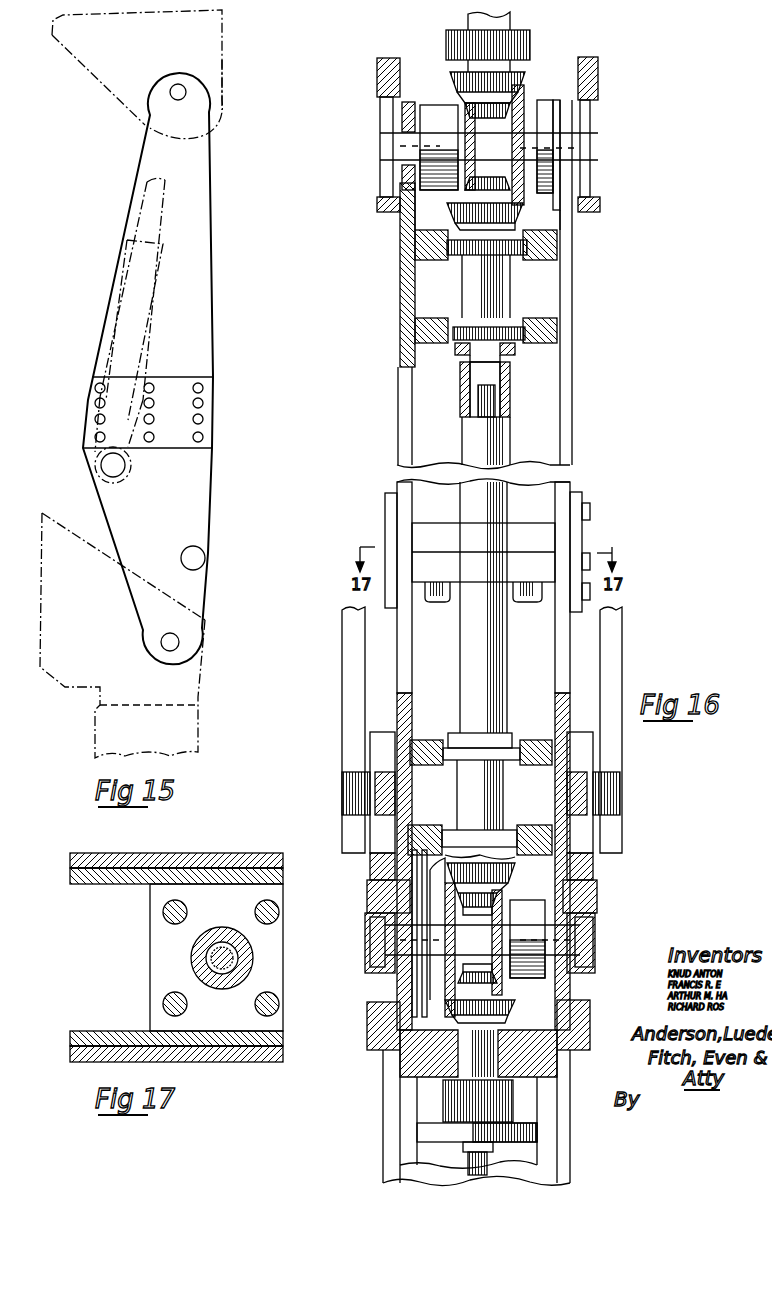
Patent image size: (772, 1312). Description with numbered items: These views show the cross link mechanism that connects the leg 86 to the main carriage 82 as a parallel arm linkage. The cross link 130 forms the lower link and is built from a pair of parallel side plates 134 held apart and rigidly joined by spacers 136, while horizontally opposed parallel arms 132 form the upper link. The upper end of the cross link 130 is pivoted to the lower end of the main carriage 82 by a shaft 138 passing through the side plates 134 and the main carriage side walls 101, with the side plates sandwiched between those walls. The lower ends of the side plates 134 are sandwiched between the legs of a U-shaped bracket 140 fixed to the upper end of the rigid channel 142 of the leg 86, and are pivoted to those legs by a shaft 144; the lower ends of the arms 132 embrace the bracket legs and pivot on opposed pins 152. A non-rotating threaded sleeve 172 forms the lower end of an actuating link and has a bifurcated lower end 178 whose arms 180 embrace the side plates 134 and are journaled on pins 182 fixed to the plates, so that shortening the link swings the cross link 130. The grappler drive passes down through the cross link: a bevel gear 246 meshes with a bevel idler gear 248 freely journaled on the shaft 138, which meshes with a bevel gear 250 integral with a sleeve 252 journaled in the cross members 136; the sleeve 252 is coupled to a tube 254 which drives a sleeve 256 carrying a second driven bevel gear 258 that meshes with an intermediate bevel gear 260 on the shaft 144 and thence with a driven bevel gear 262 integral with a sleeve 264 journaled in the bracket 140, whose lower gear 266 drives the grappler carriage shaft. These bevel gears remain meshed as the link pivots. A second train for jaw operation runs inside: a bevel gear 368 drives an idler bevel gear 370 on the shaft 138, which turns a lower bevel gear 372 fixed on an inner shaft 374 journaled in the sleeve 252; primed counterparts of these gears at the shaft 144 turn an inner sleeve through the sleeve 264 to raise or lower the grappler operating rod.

In FIG. 15, the main carriage 82 is at (208, 23).
In FIG. 16, the main carriage 82 is at (596, 62).
In FIG. 15, the leg 86 is at (188, 728).
In FIG. 15, the main carriage side walls 101 is at (216, 40).
In FIG. 16, the main carriage side walls 101 is at (378, 70).
In FIG. 15, the cross link 130 is at (200, 474).
In FIG. 17, the cross link 130 is at (242, 1062).
In FIG. 16, the cross link 130 is at (573, 486).
In FIG. 16, the parallel arms 132 is at (346, 676).
In FIG. 15, the side plates 134 is at (203, 500).
In FIG. 17, the side plates 134 is at (280, 872).
In FIG. 16, the side plates 134 is at (398, 518).
In FIG. 17, the spacers 136 is at (275, 895).
In FIG. 16, the spacers 136 is at (560, 330).
In FIG. 15, the shaft 138 is at (186, 92).
In FIG. 16, the shaft 138 is at (575, 140).
In FIG. 15, the U-shaped bracket 140 is at (206, 680).
In FIG. 16, the U-shaped bracket 140 is at (596, 881).
In FIG. 16, the channel 142 is at (570, 1115).
In FIG. 16, the shaft 144 is at (580, 932).
In FIG. 16, the pins 152 is at (356, 787).
In FIG. 15, the threaded sleeve 172 is at (152, 212).
In FIG. 15, the bifurcated lower end 178 is at (160, 268).
In FIG. 15, the arms 180 is at (145, 305).
In FIG. 15, the pins 182 is at (103, 467).
In FIG. 16, the bevel gear 246 is at (452, 75).
In FIG. 16, the bevel idler gear 248 is at (525, 90).
In FIG. 16, the bevel gear 250 is at (450, 218).
In FIG. 16, the sleeve 252 is at (462, 288).
In FIG. 17, the tube 254 is at (222, 926).
In FIG. 16, the tube 254 is at (468, 441).
In FIG. 16, the sleeve 256 is at (468, 775).
In FIG. 16, the second driven bevel gear 258 is at (515, 868).
In FIG. 16, the intermediate bevel gear 260 is at (430, 960).
In FIG. 16, the driven beveled gear 262 is at (512, 1008).
In FIG. 16, the sleeve 264 is at (500, 1057).
In FIG. 16, the gear 266 is at (513, 1097).
In FIG. 16, the bevel gear 368 is at (508, 108).
In FIG. 16, the idler bevel gear 370 is at (420, 168).
In FIG. 16, the lower bevel gear 372 is at (555, 178).
In FIG. 17, the inner shaft 374 is at (232, 952).
In FIG. 16, the inner shaft 374 is at (478, 382).